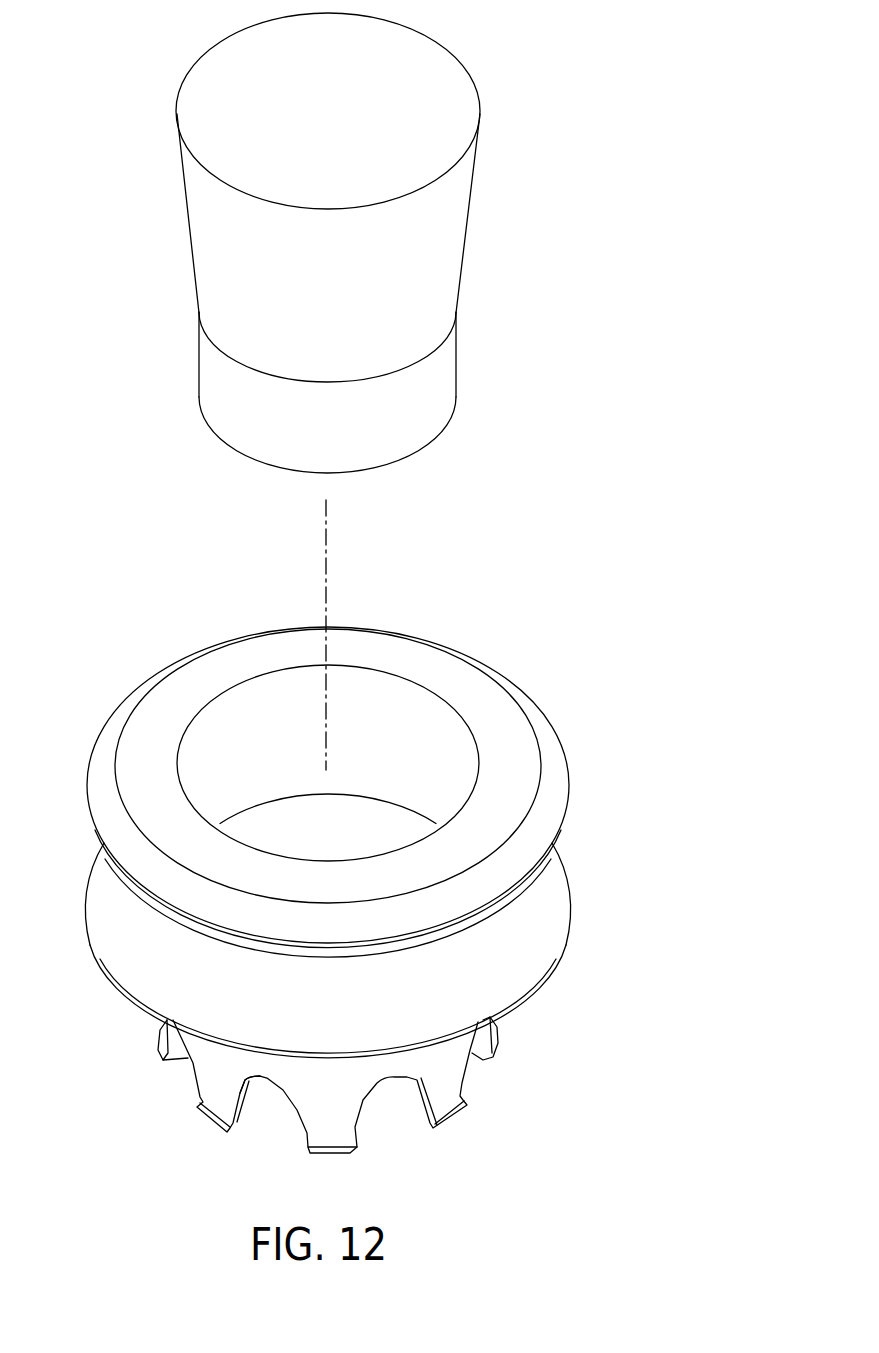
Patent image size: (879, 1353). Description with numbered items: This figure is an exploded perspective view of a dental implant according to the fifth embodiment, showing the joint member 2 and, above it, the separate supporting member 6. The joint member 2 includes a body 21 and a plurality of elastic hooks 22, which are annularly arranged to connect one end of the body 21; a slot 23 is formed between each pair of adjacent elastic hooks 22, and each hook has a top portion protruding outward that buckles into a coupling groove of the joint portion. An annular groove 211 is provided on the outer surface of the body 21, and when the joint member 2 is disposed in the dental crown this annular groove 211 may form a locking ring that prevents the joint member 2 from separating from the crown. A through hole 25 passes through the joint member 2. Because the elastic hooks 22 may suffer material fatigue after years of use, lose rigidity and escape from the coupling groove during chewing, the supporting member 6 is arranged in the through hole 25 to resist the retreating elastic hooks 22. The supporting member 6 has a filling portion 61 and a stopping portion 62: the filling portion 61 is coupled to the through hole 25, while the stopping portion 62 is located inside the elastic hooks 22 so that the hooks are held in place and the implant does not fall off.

The joint member 2 is at (371, 885).
The supporting member 6 is at (361, 240).
The body 21 is at (166, 697).
The elastic hooks 22 is at (165, 1037).
The slot 23 is at (182, 1082).
The through hole 25 is at (402, 720).
The filling portion 61 is at (445, 232).
The stopping portion 62 is at (445, 393).
The annular groove 211 is at (550, 890).